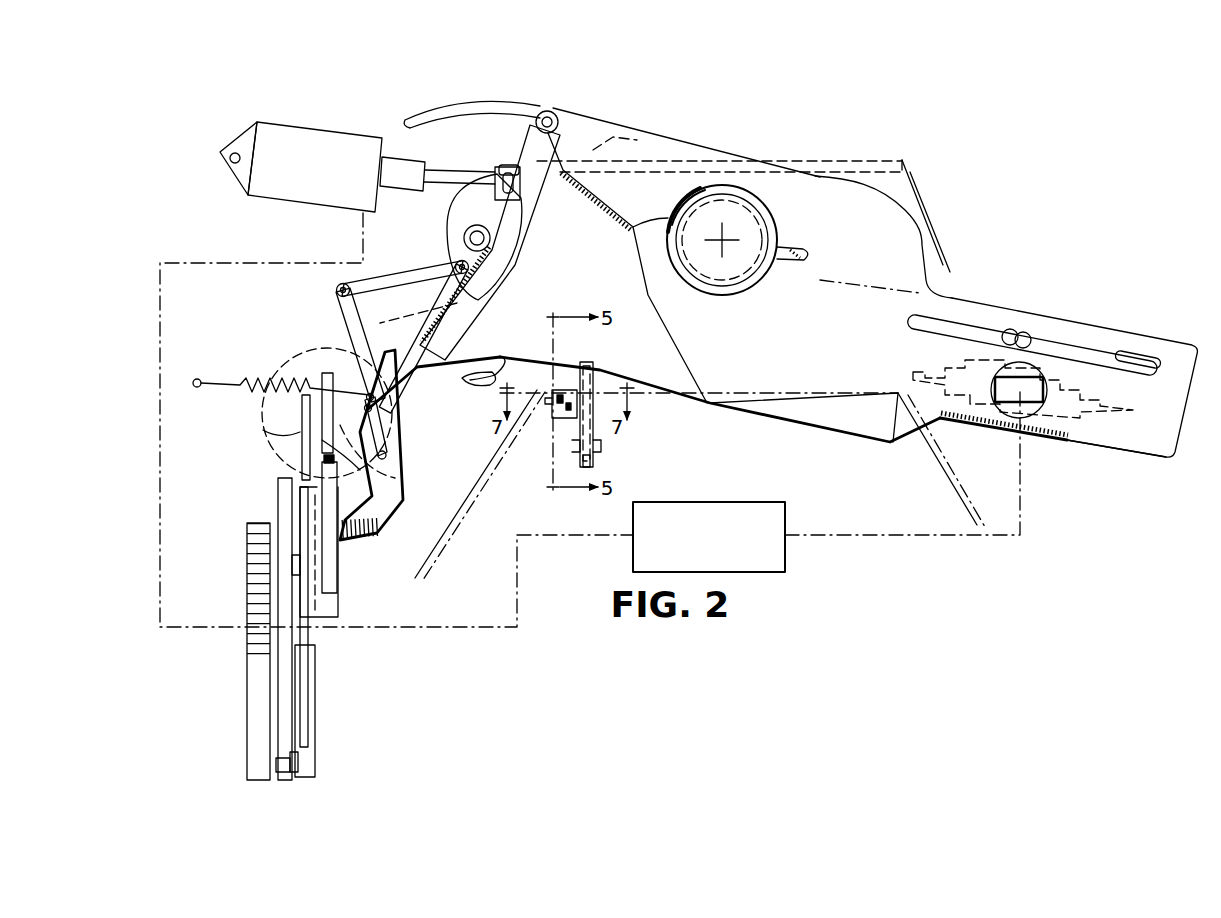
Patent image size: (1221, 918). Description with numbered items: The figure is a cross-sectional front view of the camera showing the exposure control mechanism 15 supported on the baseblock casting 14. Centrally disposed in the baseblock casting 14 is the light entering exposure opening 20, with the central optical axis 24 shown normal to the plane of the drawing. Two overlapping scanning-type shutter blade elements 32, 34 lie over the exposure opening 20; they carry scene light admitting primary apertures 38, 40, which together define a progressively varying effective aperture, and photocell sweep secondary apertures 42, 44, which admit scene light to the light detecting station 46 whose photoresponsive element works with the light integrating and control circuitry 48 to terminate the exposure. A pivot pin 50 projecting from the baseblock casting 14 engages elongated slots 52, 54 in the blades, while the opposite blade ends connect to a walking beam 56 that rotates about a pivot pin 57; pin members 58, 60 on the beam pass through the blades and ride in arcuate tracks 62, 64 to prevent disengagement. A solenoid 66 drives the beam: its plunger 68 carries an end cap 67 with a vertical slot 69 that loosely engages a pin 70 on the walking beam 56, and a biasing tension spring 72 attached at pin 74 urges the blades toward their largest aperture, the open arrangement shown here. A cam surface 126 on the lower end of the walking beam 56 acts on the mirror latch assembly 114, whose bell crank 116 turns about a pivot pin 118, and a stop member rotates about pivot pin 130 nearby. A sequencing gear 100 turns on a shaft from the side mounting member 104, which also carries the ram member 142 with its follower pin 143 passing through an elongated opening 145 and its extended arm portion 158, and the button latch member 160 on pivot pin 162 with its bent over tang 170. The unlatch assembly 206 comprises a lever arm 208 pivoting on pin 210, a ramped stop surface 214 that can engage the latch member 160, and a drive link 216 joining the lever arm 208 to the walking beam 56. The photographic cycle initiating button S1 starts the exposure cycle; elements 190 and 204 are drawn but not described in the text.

The baseblock casting 14 is at (1009, 276).
The exposure control mechanism 15 is at (762, 144).
The light entering exposure opening 20 is at (745, 283).
The central optical axis 24 is at (724, 238).
The shutter blade element 32 is at (585, 115).
The shutter blade element 34 is at (648, 388).
The scene light admitting primary aperture 38 is at (800, 262).
The scene light admitting primary aperture 40 is at (705, 183).
The photocell sweep secondary aperture 42 is at (1068, 440).
The photocell sweep secondary aperture 44 is at (975, 430).
The light detecting station 46 is at (1028, 410).
The light integrating and control circuitry 48 is at (742, 502).
The pivot pin 50 is at (1028, 336).
The elongated slot 52 is at (1128, 355).
The elongated slot 54 is at (958, 322).
The walking beam 56 is at (465, 320).
The pivot pin 57 is at (464, 238).
The pin member 58 is at (547, 110).
The pin member 60 is at (376, 400).
The arcuate track 62 is at (455, 112).
The arcuate track 64 is at (490, 382).
The solenoid 66 is at (318, 130).
The end cap 67 is at (495, 192).
The plunger 68 is at (452, 170).
The vertical slot 69 is at (512, 163).
The pin 70 is at (525, 222).
The biasing tension spring 72 is at (235, 392).
The pin 74 is at (386, 440).
The sequencing gear 100 is at (245, 590).
The side mounting member 104 is at (283, 478).
The mirror latch assembly 114 is at (597, 441).
The bell crank 116 is at (603, 368).
The pivot pin 118 is at (592, 463).
The cam surface 126 is at (392, 475).
The pivot pin 130 is at (562, 418).
The ram member 142 is at (318, 733).
The follower pin 143 is at (276, 766).
The elongated opening 145 is at (298, 757).
The extended arm portion 158 is at (310, 688).
The button latch member 160 is at (325, 635).
The pivot pin 162 is at (292, 565).
The bent over tang 170 is at (403, 500).
The slide 190 is at (338, 565).
The hook member 204 is at (290, 428).
The unlatch assembly 206 is at (325, 335).
The lever arm 208 is at (372, 328).
The pivot pin 210 is at (388, 455).
The ramped stop surface 214 is at (368, 538).
The drive link 216 is at (380, 268).
The photographic cycle initiating button S1 is at (320, 360).